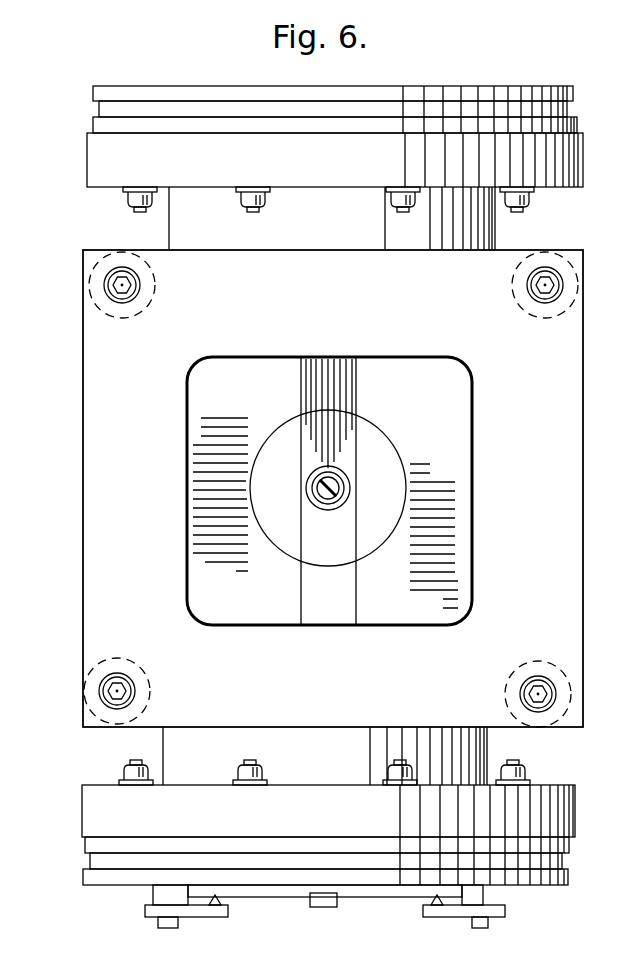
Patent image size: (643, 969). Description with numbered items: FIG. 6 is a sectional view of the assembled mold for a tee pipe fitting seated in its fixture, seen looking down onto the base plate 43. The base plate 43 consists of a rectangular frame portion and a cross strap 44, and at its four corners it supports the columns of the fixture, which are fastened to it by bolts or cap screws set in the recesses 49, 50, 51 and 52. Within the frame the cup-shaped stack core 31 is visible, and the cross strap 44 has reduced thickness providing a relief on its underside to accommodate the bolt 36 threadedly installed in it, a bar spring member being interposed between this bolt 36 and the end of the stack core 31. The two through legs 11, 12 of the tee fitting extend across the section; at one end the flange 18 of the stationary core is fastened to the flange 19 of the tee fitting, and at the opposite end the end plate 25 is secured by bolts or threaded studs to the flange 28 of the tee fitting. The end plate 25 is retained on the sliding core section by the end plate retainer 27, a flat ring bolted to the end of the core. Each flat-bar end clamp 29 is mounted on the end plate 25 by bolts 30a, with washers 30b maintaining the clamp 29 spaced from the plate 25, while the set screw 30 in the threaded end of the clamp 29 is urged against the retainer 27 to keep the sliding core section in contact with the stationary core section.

The flange 18 is at (573, 96).
The flange of the tee fitting 19 is at (583, 176).
The through leg 11 is at (490, 228).
The base plate 43 is at (92, 420).
The recess 49 is at (108, 292).
The recess 52 is at (565, 290).
The recess 50 is at (100, 690).
The recess 51 is at (560, 693).
The stack core 31 is at (372, 430).
The bolt 36 is at (350, 495).
The cross strap 44 is at (350, 588).
The through leg 12 is at (487, 753).
The flange of the tee fitting 28 is at (575, 810).
The end plate 25 is at (568, 880).
The washers 30b is at (515, 898).
The end clamp 29 is at (440, 938).
The bolts 30a is at (505, 937).
The set screw 30 is at (396, 922).
The end plate retainer 27 is at (346, 892).